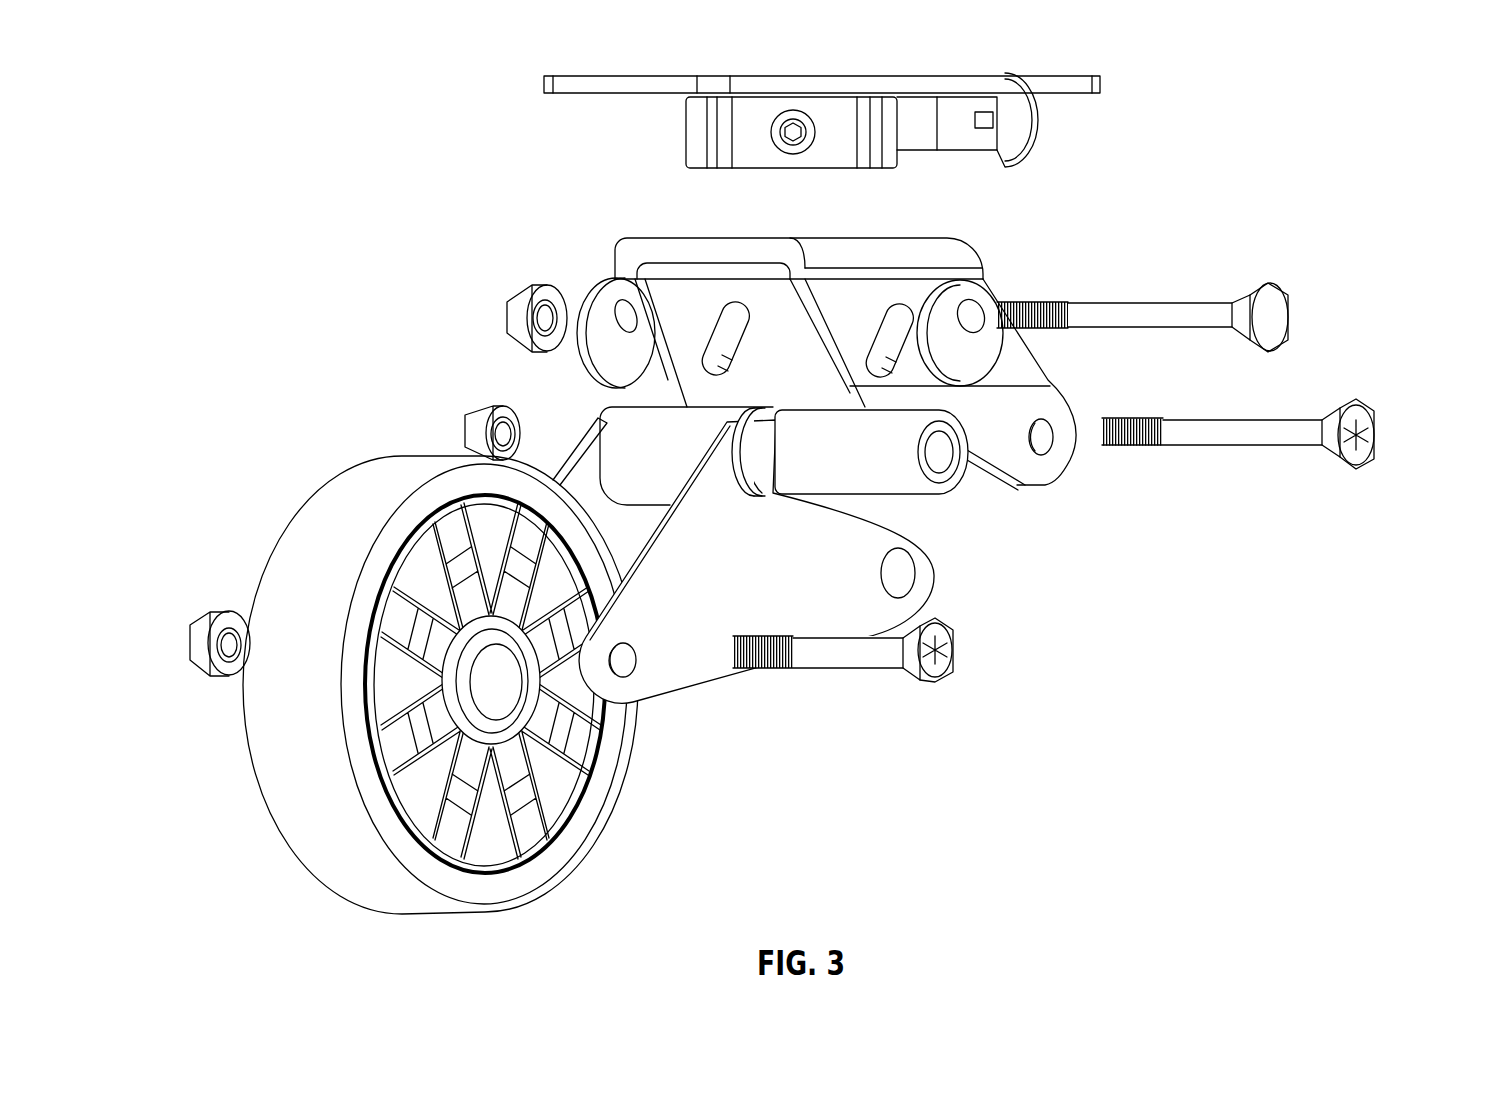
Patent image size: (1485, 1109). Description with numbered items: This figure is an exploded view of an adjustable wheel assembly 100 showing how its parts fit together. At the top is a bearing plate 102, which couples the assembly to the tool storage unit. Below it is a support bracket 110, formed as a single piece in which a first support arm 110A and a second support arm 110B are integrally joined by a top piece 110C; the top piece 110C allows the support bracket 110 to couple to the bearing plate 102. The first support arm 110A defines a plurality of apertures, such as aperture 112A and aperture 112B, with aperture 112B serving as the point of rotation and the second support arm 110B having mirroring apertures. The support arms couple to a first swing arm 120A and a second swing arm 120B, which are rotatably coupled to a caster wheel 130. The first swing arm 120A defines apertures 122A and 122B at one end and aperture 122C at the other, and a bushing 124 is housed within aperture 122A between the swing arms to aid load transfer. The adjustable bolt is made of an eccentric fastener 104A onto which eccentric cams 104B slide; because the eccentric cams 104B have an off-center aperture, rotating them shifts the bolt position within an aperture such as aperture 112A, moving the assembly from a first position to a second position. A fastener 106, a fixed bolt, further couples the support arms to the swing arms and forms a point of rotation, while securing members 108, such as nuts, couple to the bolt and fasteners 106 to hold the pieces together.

The adjustable wheel assembly 100 is at (240, 122).
The bearing plate 102 is at (1100, 85).
The eccentric fastener 104A is at (1285, 320).
The eccentric cams 104B is at (985, 300).
The fastener 106 is at (1374, 436).
The securing member 108 is at (507, 317).
The support bracket 110 is at (600, 212).
The first support arm 110A is at (1057, 467).
The second support arm 110B is at (660, 297).
The top piece 110C is at (725, 240).
The aperture 112A is at (910, 338).
The aperture 112B is at (1050, 432).
The first swing arm 120A is at (718, 680).
The second swing arm 120B is at (585, 480).
The aperture 122A is at (756, 475).
The aperture 122B is at (898, 573).
The aperture 122C is at (634, 660).
The bushing 124 is at (955, 495).
The caster wheel 130 is at (580, 865).